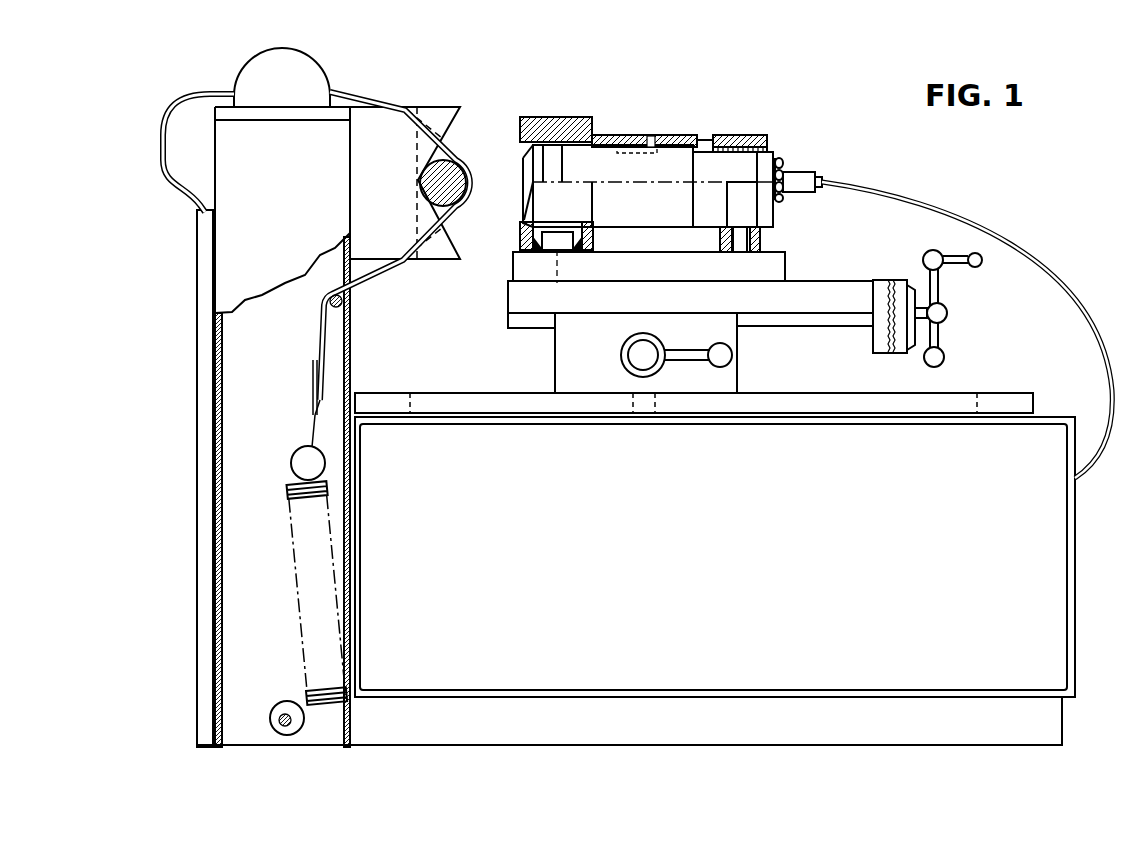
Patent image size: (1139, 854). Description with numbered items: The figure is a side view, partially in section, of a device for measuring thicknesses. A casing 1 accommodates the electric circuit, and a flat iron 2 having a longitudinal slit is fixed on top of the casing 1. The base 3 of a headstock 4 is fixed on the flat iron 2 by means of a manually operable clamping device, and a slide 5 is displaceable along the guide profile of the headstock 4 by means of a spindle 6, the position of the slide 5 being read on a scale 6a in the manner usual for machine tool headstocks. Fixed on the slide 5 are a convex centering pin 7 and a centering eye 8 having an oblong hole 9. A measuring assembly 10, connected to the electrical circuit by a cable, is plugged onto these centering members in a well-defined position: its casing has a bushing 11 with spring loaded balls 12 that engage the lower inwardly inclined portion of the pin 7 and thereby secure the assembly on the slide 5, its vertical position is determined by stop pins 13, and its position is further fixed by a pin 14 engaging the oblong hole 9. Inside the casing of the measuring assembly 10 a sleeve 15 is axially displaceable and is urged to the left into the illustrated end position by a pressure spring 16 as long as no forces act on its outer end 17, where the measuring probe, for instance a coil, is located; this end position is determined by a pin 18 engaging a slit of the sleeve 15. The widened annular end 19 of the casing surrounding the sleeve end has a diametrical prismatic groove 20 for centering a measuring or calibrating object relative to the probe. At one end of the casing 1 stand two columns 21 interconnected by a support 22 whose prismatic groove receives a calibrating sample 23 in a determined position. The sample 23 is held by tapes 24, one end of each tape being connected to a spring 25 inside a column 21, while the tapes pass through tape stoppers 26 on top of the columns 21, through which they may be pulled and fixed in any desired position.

The casing 1 is at (1050, 603).
The flat iron 2 is at (463, 398).
The base 3 is at (560, 360).
The headstock 4 is at (778, 300).
The slide 5 is at (660, 270).
The spindle 6 is at (922, 322).
The scale 6a is at (893, 280).
The convex centering pin 7 is at (568, 240).
The centering eye 8 is at (762, 240).
The oblong hole 9 is at (730, 254).
The measuring assembly 10 is at (692, 117).
The bushing 11 is at (533, 250).
The spring loaded balls 12 is at (544, 252).
The stop pins 13 is at (562, 278).
The pin 14 is at (745, 254).
The sleeve 15 is at (605, 137).
The pressure spring 16 is at (740, 137).
The outer end 17 is at (527, 178).
The pin 18 is at (650, 140).
The widened annular end 19 is at (553, 122).
The prismatic groove 20 is at (526, 208).
The column 21 is at (220, 505).
The support 22 is at (383, 126).
The calibrating sample 23 is at (450, 160).
The tape 24 is at (166, 117).
The spring 25 is at (282, 575).
The tape stopper 26 is at (312, 74).